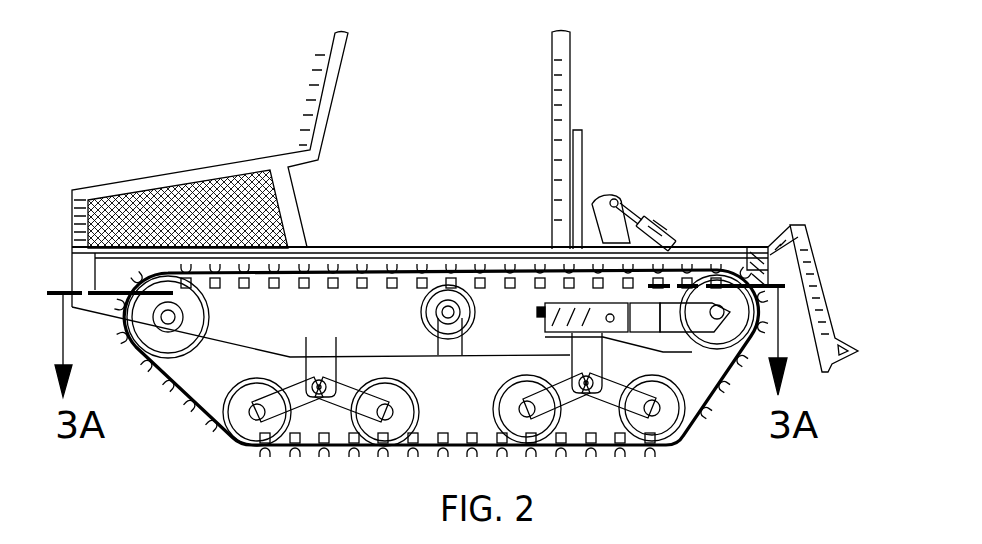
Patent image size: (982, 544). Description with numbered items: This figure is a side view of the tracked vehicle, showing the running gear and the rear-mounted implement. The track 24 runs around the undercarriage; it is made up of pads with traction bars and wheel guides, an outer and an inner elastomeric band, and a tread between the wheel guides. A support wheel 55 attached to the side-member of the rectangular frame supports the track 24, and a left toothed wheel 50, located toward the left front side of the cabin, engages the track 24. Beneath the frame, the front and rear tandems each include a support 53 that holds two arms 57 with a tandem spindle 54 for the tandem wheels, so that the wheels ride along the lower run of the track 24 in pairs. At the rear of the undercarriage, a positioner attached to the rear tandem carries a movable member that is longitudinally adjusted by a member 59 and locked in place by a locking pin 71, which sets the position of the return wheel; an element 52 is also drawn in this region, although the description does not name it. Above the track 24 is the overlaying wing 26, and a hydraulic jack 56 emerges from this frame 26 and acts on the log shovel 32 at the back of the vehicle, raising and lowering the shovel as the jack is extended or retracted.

The track 24 is at (465, 285).
The overlaying wing 26 is at (370, 250).
The log shovel 32 is at (817, 287).
The left toothed wheel 50 is at (187, 330).
The track tensioner cylinder 52 is at (508, 340).
The support 53 is at (308, 400).
The tandem spindle 54 is at (320, 398).
The support wheel 55 is at (428, 268).
The hydraulic jack 56 is at (657, 220).
The arms 57 is at (430, 385).
The member 59 is at (538, 306).
The locking pin 71 is at (610, 313).